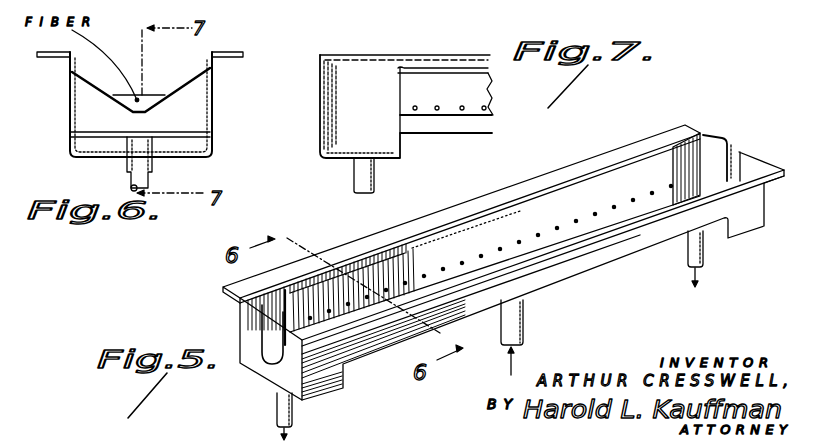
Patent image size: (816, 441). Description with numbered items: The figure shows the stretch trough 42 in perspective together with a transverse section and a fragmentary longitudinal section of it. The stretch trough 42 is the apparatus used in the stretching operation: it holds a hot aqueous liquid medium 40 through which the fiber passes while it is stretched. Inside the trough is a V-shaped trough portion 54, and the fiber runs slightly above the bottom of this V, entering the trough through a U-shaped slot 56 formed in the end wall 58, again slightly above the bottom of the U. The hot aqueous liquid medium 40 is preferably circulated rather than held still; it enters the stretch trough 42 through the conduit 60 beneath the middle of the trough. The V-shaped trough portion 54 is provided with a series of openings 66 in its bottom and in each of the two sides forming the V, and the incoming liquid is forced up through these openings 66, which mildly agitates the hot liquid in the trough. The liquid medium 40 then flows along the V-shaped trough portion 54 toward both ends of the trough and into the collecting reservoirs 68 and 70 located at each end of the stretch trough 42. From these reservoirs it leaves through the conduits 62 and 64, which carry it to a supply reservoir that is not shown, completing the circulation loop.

In FIG. 6, the hot aqueous liquid medium 40 is at (115, 86).
In FIG. 6, the stretch trough 42 is at (61, 81).
In FIG. 5, the stretch trough 42 is at (562, 167).
In FIG. 6, the V-shaped trough portion 54 is at (182, 97).
In FIG. 7, the V-shaped trough portion 54 is at (435, 70).
In FIG. 5, the V-shaped trough portion 54 is at (470, 235).
In FIG. 7, the U-shaped slot 56 is at (325, 72).
In FIG. 5, the U-shaped slot 56 is at (736, 163).
In FIG. 7, the end wall 58 is at (320, 147).
In FIG. 5, the end wall 58 is at (250, 367).
In FIG. 6, the conduit 60 is at (152, 170).
In FIG. 5, the conduit 60 is at (523, 316).
In FIG. 7, the conduit 62 is at (375, 182).
In FIG. 5, the conduit 62 is at (295, 418).
In FIG. 6, the conduit 64 is at (131, 187).
In FIG. 5, the conduit 64 is at (703, 255).
In FIG. 6, the openings 66 is at (117, 104).
In FIG. 7, the openings 66 is at (415, 110).
In FIG. 5, the openings 66 is at (538, 235).
In FIG. 7, the collecting reservoir 68 is at (335, 108).
In FIG. 5, the collecting reservoir 70 is at (701, 133).